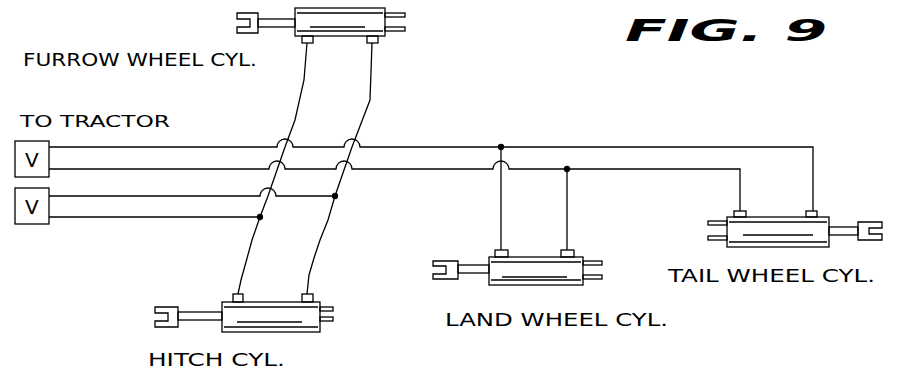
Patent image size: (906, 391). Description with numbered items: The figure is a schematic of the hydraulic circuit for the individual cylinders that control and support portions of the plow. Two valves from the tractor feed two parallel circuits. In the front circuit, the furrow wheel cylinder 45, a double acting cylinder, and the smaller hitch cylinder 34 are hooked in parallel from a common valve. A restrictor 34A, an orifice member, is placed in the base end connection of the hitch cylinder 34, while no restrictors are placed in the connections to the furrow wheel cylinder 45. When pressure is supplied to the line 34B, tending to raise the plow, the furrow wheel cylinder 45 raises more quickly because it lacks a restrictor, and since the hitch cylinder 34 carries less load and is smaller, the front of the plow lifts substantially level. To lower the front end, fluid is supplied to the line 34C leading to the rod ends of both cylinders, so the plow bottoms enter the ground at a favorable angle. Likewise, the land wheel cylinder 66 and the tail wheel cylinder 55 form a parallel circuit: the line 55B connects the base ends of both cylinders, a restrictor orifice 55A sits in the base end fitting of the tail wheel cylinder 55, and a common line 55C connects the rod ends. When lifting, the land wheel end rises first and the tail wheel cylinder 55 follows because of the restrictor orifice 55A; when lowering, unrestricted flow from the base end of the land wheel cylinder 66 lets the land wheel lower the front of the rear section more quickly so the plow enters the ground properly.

The furrow wheel cylinder 45 is at (350, 37).
The hitch cylinder 34 is at (302, 322).
The restrictor 34A is at (309, 293).
The line 34B is at (329, 218).
The line 34C is at (253, 245).
The tail wheel cylinder 55 is at (778, 228).
The restrictor orifice 55A is at (740, 212).
The line 55B is at (635, 167).
The common line 55C is at (788, 147).
The land wheel cylinder 66 is at (583, 257).